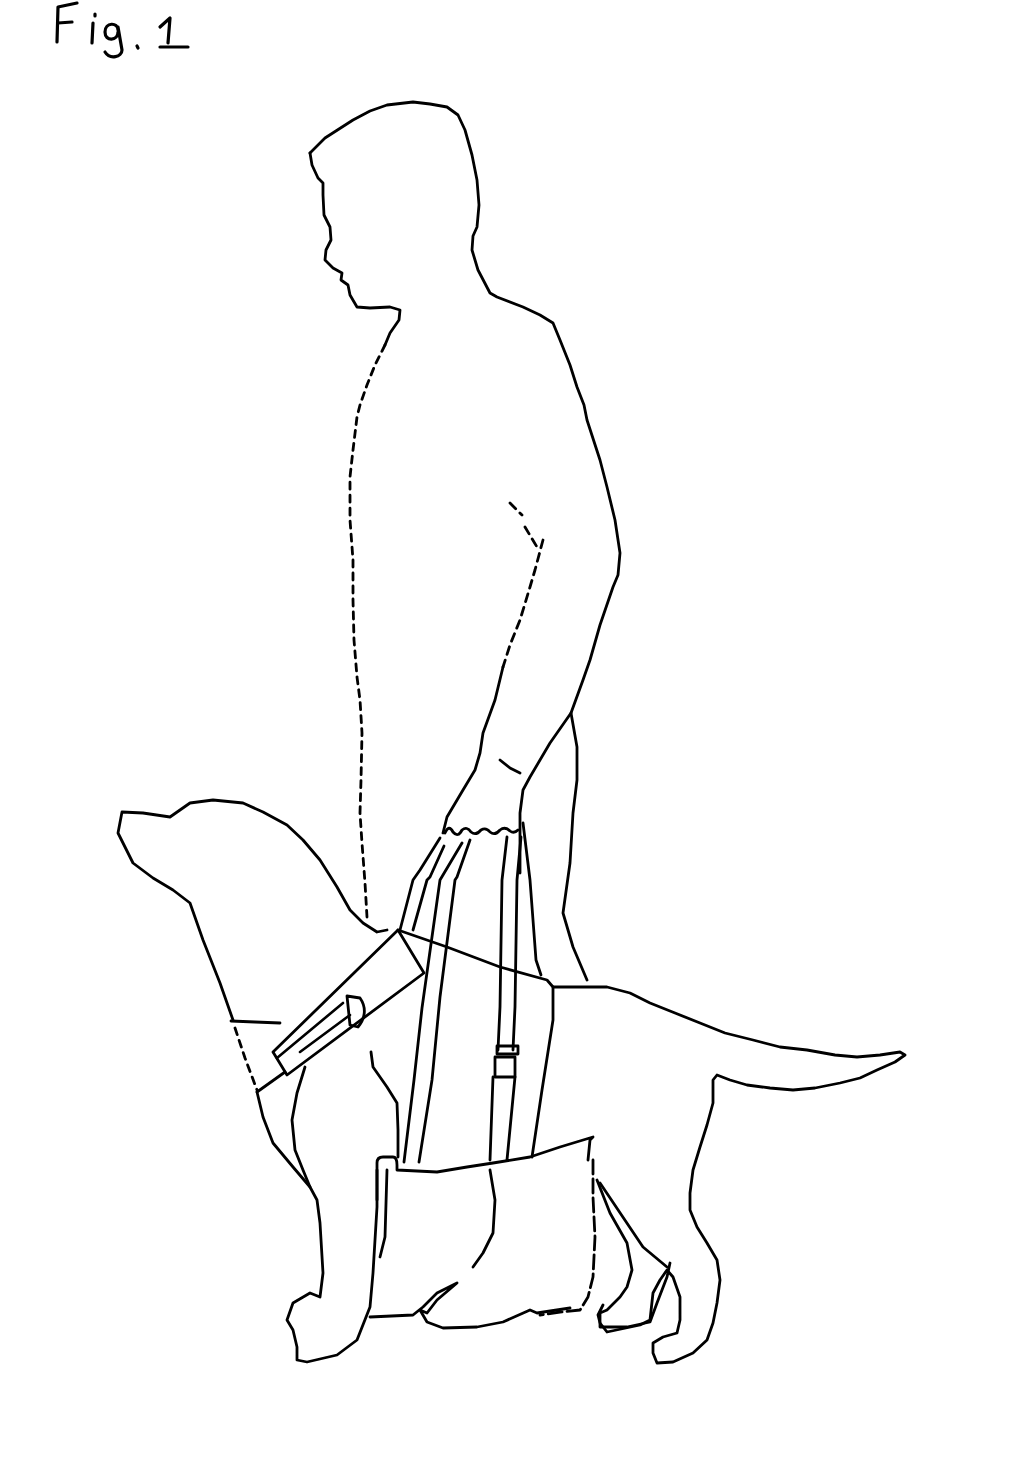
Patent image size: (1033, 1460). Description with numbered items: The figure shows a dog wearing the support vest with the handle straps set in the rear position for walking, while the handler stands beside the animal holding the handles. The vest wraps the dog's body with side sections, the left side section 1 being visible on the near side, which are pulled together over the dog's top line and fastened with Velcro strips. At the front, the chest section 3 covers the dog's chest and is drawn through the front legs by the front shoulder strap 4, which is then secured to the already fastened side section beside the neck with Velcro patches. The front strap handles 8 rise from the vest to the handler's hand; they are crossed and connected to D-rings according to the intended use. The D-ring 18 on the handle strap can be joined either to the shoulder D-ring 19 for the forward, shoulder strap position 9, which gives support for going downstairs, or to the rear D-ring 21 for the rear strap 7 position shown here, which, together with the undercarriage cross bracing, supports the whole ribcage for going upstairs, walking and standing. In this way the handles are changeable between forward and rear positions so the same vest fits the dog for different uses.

The left side section 1 is at (482, 1065).
The chest section 3 is at (231, 1021).
The front shoulder strap 4 is at (348, 975).
The rear strap 7 is at (506, 1119).
The front strap handle 8 is at (412, 895).
The shoulder strap position 9 is at (320, 1043).
The D-ring 18 is at (514, 1048).
The shoulder D-ring 19 is at (359, 1029).
The rear D-ring 21 is at (516, 1064).